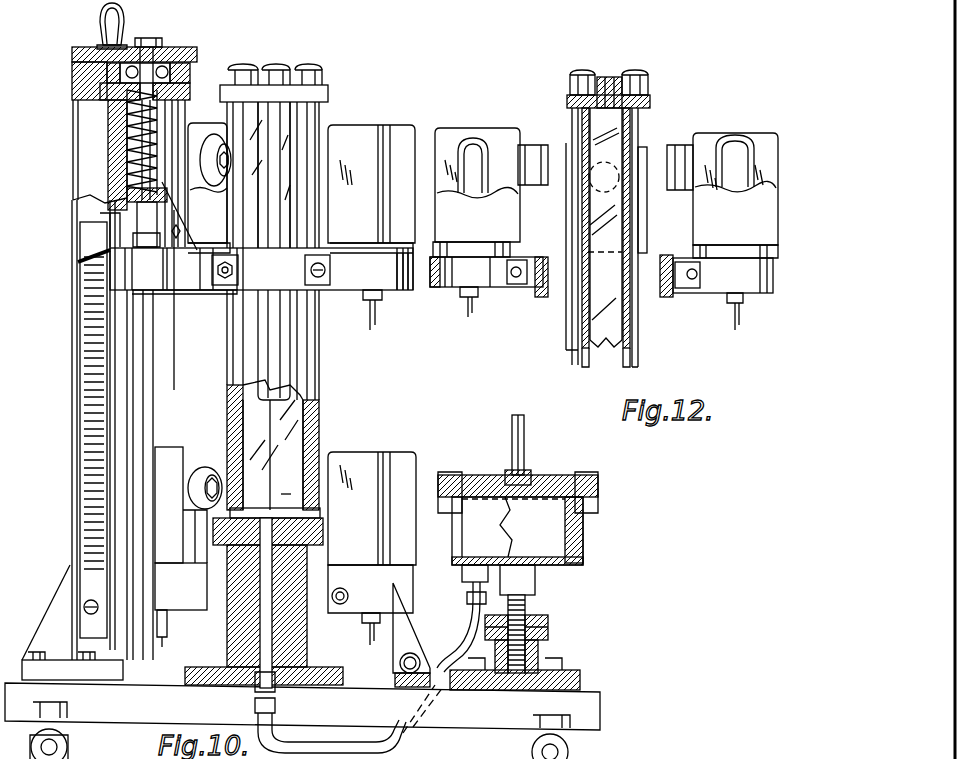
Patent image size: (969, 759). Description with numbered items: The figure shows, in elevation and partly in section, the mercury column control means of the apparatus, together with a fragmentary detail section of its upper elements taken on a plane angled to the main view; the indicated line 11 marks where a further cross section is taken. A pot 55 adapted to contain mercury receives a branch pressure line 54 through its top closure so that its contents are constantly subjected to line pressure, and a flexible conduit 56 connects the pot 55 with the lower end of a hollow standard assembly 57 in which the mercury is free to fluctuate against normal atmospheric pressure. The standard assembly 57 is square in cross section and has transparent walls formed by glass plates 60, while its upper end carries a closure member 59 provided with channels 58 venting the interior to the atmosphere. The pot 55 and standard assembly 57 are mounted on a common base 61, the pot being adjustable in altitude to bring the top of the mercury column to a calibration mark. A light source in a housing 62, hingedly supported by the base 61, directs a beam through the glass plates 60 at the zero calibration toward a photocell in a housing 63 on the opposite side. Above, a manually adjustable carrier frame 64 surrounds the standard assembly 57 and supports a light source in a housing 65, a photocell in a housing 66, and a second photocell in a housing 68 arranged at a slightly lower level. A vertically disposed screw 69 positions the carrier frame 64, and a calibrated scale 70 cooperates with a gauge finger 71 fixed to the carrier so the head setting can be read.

In FIG. 10, the section line 11 is at (66, 186).
In FIG. 10, the branch pressure line 54 is at (524, 427).
In FIG. 10, the pot 55 is at (583, 535).
In FIG. 10, the flexible conduit 56 is at (395, 740).
In FIG. 10, the standard assembly 57 is at (290, 365).
In FIG. 12, the standard assembly 57 is at (613, 322).
In FIG. 12, the channels 58 is at (610, 83).
In FIG. 12, the closure member 59 is at (598, 110).
In FIG. 10, the glass plates 60 is at (248, 407).
In FIG. 12, the glass plates 60 is at (623, 286).
In FIG. 10, the base 61 is at (302, 721).
In FIG. 10, the light source housing 62 is at (379, 569).
In FIG. 10, the photocell housing 63 is at (165, 462).
In FIG. 10, the carrier frame 64 is at (261, 271).
In FIG. 12, the carrier frame 64 is at (553, 297).
In FIG. 10, the light source housing 65 is at (371, 227).
In FIG. 12, the light source housing 65 is at (719, 231).
In FIG. 10, the photocell housing 66 is at (198, 135).
In FIG. 12, the photocell housing 66 is at (490, 192).
In FIG. 12, the second photocell housing 68 is at (570, 213).
In FIG. 10, the screw 69 is at (130, 153).
In FIG. 10, the calibrated scale 70 is at (85, 384).
In FIG. 10, the gauge finger 71 is at (82, 256).